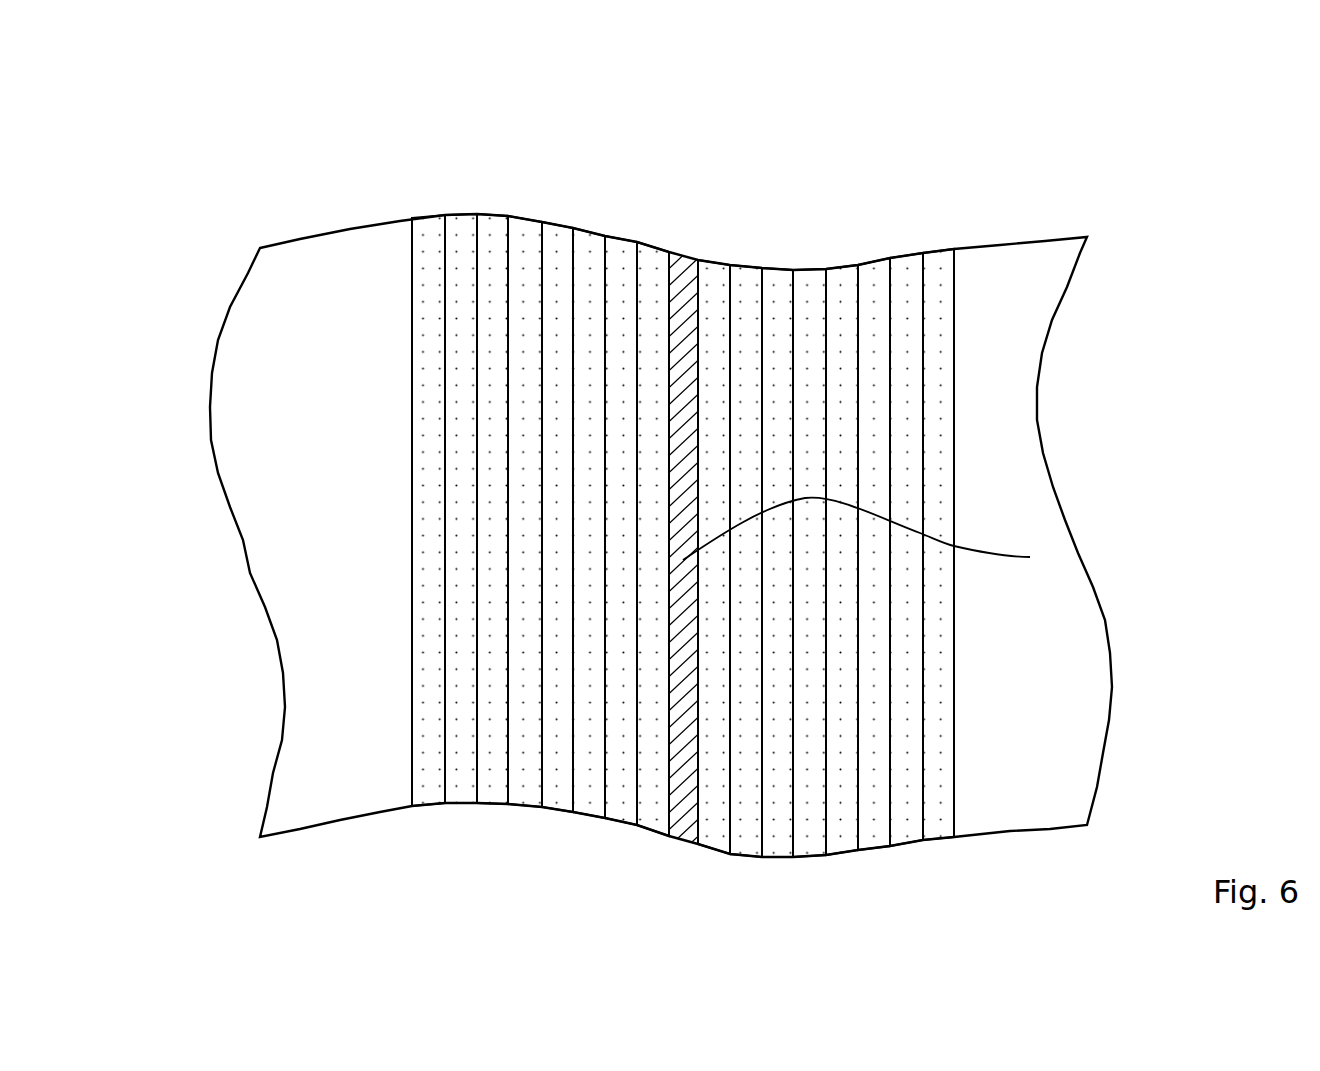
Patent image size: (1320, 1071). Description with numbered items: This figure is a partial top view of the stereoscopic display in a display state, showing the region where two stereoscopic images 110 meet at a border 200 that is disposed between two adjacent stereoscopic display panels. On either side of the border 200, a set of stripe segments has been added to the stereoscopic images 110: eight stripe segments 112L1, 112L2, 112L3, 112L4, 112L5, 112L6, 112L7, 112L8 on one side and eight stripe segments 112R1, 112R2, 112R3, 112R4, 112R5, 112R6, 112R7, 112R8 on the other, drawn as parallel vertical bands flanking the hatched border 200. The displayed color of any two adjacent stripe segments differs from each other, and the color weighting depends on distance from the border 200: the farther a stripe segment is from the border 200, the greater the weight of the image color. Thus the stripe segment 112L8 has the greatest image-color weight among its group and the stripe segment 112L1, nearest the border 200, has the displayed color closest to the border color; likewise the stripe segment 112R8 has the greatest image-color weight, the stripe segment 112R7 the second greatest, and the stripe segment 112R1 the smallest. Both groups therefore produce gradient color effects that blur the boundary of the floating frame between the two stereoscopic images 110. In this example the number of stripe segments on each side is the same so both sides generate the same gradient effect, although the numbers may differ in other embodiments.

The stereoscopic image 110 is at (350, 683).
The border 200 is at (1030, 557).
The stripe segment 112R1 is at (650, 260).
The stripe segment 112R2 is at (620, 805).
The stripe segment 112R3 is at (580, 237).
The stripe segment 112R4 is at (560, 780).
The stripe segment 112R5 is at (517, 228).
The stripe segment 112R6 is at (497, 793).
The stripe segment 112R7 is at (455, 237).
The stripe segment 112R8 is at (432, 795).
The stripe segment 112L1 is at (707, 288).
The stripe segment 112L2 is at (743, 835).
The stripe segment 112L3 is at (773, 310).
The stripe segment 112L4 is at (812, 847).
The stripe segment 112L5 is at (838, 287).
The stripe segment 112L6 is at (878, 835).
The stripe segment 112L7 is at (905, 277).
The stripe segment 112L8 is at (948, 808).